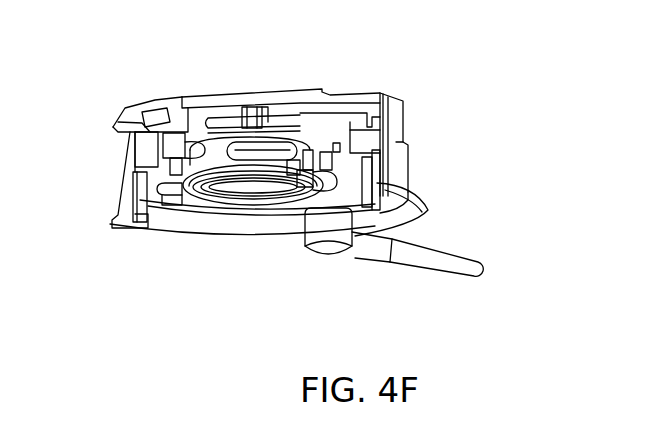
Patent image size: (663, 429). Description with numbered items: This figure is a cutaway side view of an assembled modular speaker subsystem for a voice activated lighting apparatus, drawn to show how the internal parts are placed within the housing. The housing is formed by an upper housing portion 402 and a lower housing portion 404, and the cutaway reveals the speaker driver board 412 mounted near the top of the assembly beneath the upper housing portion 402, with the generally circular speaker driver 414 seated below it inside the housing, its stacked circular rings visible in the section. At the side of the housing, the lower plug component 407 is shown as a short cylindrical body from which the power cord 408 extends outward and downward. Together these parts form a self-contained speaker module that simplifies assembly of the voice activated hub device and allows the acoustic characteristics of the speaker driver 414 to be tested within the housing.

The upper housing portion 402 is at (337, 92).
The lower housing portion 404 is at (411, 168).
The lower plug component 407 is at (313, 243).
The power cord 408 is at (458, 252).
The speaker driver board 412 is at (158, 103).
The speaker driver 414 is at (232, 212).